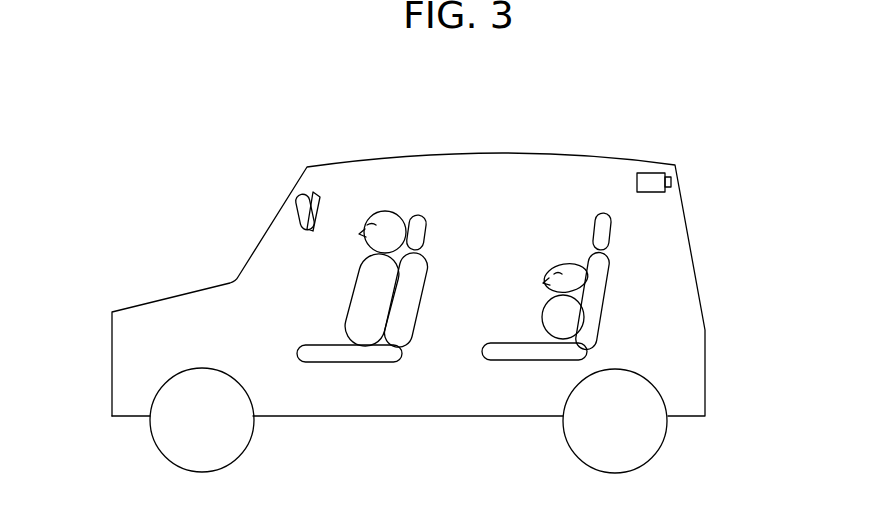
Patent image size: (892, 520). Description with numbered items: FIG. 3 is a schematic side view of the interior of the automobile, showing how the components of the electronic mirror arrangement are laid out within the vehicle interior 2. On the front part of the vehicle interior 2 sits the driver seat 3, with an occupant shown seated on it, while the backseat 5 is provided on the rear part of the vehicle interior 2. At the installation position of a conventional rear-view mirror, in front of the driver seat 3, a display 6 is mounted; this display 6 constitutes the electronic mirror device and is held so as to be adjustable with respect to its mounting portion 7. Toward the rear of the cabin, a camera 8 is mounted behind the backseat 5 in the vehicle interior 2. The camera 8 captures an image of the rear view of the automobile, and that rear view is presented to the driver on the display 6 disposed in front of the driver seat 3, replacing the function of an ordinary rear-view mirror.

The vehicle interior 2 is at (543, 197).
The driver seat 3 is at (360, 355).
The backseat 5 is at (507, 360).
The display 6 is at (320, 198).
The mounting portion 7 is at (298, 193).
The camera 8 is at (647, 178).